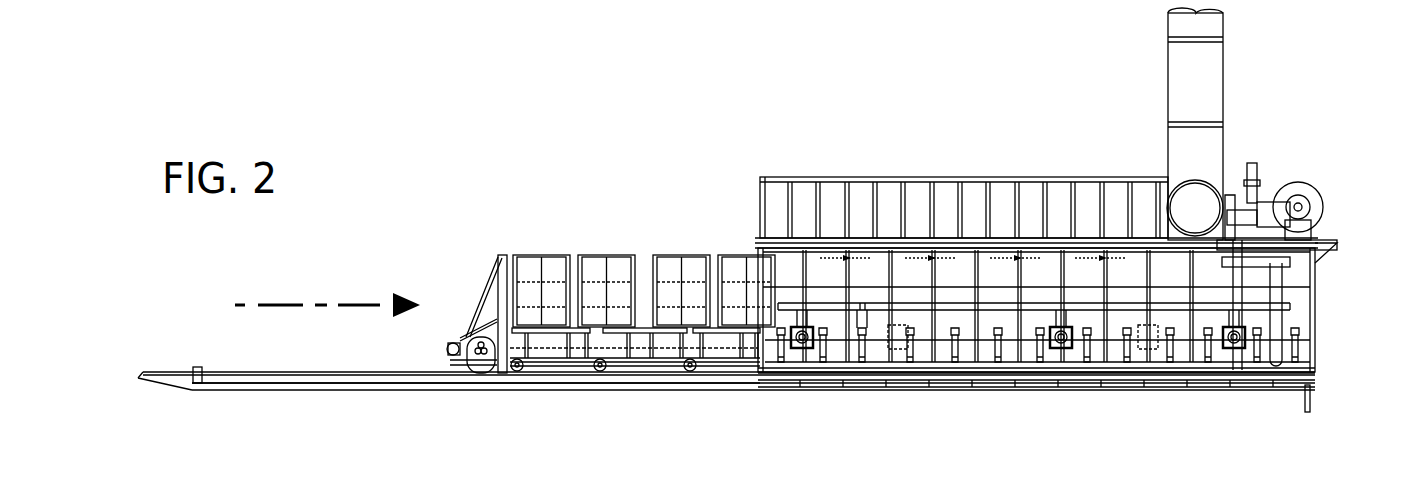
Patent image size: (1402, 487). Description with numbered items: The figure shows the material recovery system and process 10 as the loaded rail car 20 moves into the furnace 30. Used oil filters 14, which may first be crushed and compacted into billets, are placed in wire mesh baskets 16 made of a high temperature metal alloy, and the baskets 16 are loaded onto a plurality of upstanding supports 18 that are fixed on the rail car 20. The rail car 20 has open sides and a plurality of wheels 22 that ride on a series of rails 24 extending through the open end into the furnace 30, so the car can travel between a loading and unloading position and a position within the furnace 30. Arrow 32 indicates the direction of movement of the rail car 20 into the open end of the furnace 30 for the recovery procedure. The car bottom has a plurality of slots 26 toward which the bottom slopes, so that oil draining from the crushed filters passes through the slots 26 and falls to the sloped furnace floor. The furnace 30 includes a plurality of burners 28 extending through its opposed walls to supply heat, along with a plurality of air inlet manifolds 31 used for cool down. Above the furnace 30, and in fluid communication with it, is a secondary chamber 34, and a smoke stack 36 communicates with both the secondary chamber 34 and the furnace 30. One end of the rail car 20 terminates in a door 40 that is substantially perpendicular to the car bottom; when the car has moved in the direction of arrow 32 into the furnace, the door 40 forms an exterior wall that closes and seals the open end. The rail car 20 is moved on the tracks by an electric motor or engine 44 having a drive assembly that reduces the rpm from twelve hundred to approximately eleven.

The material recovery system and process 10 is at (1309, 124).
The used oil filters 14 is at (592, 268).
The wire mesh baskets 16 is at (662, 255).
The upstanding supports 18 is at (565, 343).
The rail car 20 is at (555, 232).
The wheels 22 is at (688, 362).
The rails 24 is at (346, 372).
The slots 26 is at (555, 357).
The burners 28 is at (795, 342).
The furnace 30 is at (1317, 308).
The air inlet manifolds 31 is at (1000, 347).
The arrow 32 is at (292, 304).
The secondary chamber 34 is at (945, 193).
The smoke stack 36 is at (1208, 77).
The door 40 is at (509, 272).
The electric motor or engine 44 is at (480, 327).